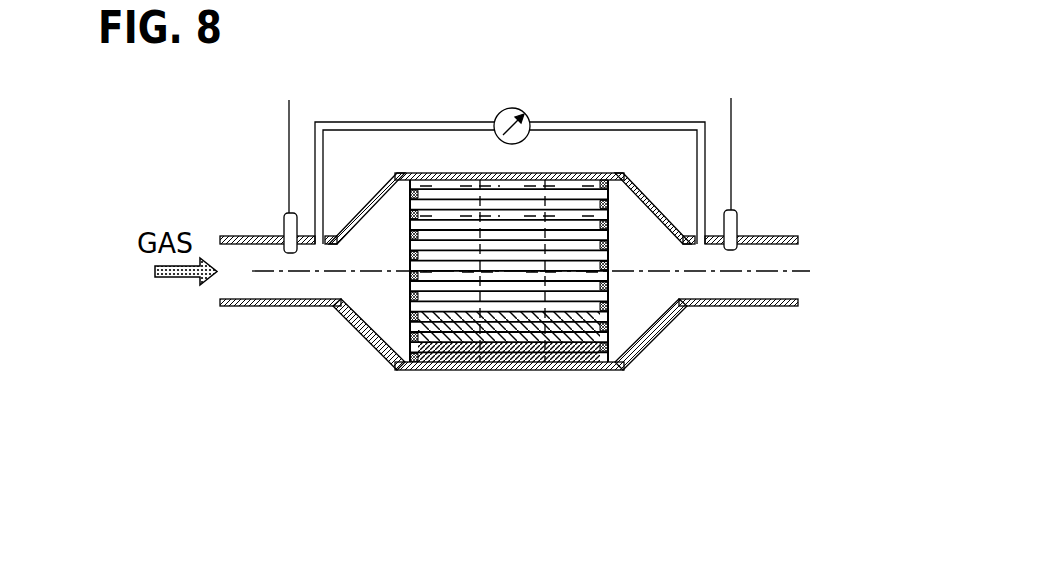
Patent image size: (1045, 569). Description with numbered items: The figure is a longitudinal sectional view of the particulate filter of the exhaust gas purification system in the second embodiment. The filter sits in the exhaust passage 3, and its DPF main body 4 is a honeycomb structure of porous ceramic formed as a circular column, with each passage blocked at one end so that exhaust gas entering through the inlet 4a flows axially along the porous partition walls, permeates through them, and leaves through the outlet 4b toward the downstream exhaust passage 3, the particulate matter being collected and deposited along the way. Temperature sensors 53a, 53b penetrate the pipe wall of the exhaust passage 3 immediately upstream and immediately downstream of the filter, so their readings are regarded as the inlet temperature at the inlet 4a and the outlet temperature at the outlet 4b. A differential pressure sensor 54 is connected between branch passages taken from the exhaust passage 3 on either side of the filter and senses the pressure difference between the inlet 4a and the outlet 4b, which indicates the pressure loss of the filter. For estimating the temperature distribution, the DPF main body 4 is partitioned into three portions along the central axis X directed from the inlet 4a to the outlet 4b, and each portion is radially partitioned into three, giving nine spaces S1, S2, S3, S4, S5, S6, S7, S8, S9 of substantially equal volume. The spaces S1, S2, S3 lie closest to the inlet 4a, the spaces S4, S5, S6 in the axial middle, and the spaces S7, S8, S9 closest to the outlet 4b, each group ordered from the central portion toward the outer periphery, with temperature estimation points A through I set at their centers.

The exhaust passage 3 is at (300, 324).
The DPF main body 4 is at (586, 190).
The inlet 4a is at (410, 283).
The outlet 4b is at (608, 280).
The temperature sensor 53a is at (285, 226).
The temperature sensor 53b is at (737, 226).
The differential pressure sensor 54 is at (512, 108).
The central axis X is at (768, 271).
The space S1 is at (410, 332).
The space S2 is at (434, 294).
The space S3 is at (482, 313).
The space S4 is at (580, 293).
The space S5 is at (538, 320).
The space S6 is at (528, 295).
The space S7 is at (603, 305).
The space S8 is at (603, 345).
The space S9 is at (578, 340).